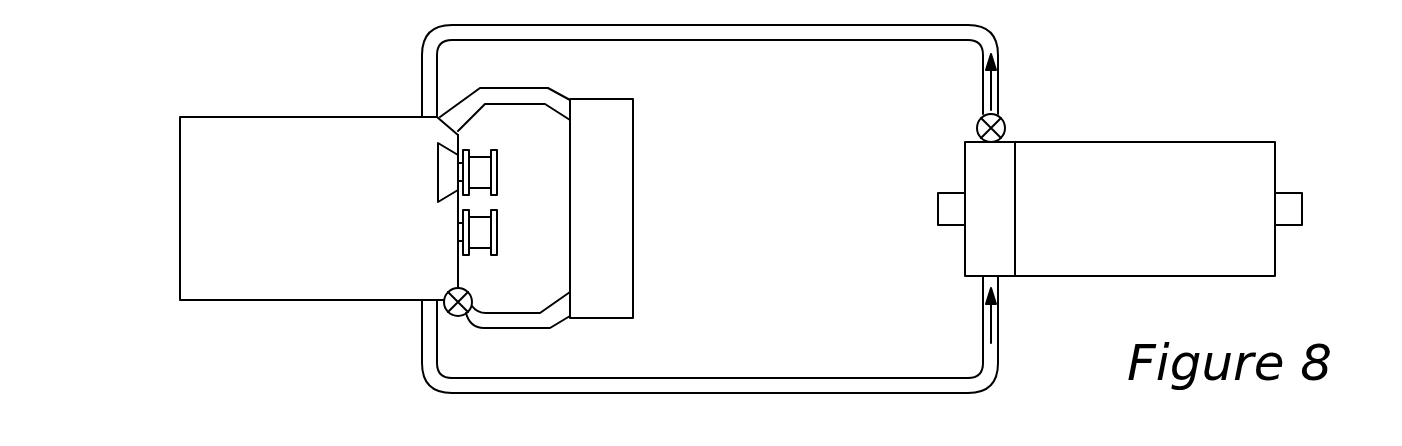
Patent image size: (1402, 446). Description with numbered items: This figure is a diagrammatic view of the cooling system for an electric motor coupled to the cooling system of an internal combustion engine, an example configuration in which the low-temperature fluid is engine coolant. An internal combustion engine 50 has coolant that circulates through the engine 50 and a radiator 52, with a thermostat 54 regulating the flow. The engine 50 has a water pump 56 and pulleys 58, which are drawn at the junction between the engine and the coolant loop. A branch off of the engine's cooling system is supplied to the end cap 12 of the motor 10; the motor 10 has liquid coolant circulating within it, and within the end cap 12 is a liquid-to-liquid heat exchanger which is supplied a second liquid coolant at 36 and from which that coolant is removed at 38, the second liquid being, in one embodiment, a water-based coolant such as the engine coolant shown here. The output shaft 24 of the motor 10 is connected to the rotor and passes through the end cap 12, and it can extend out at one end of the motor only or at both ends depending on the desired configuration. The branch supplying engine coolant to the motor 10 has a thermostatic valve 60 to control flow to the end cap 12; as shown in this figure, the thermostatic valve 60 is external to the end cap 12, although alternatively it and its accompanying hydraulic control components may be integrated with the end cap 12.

The motor 10 is at (1158, 125).
The end cap 12 is at (1008, 223).
The output shaft 24 is at (950, 212).
The second liquid coolant supply 36 is at (1002, 289).
The second liquid coolant removal 38 is at (1002, 90).
The internal combustion engine 50 is at (338, 223).
The radiator 52 is at (620, 223).
The thermostat 54 is at (455, 315).
The water pump 56 is at (447, 170).
The pulleys 58 is at (480, 166).
The thermostatic valve 60 is at (976, 128).